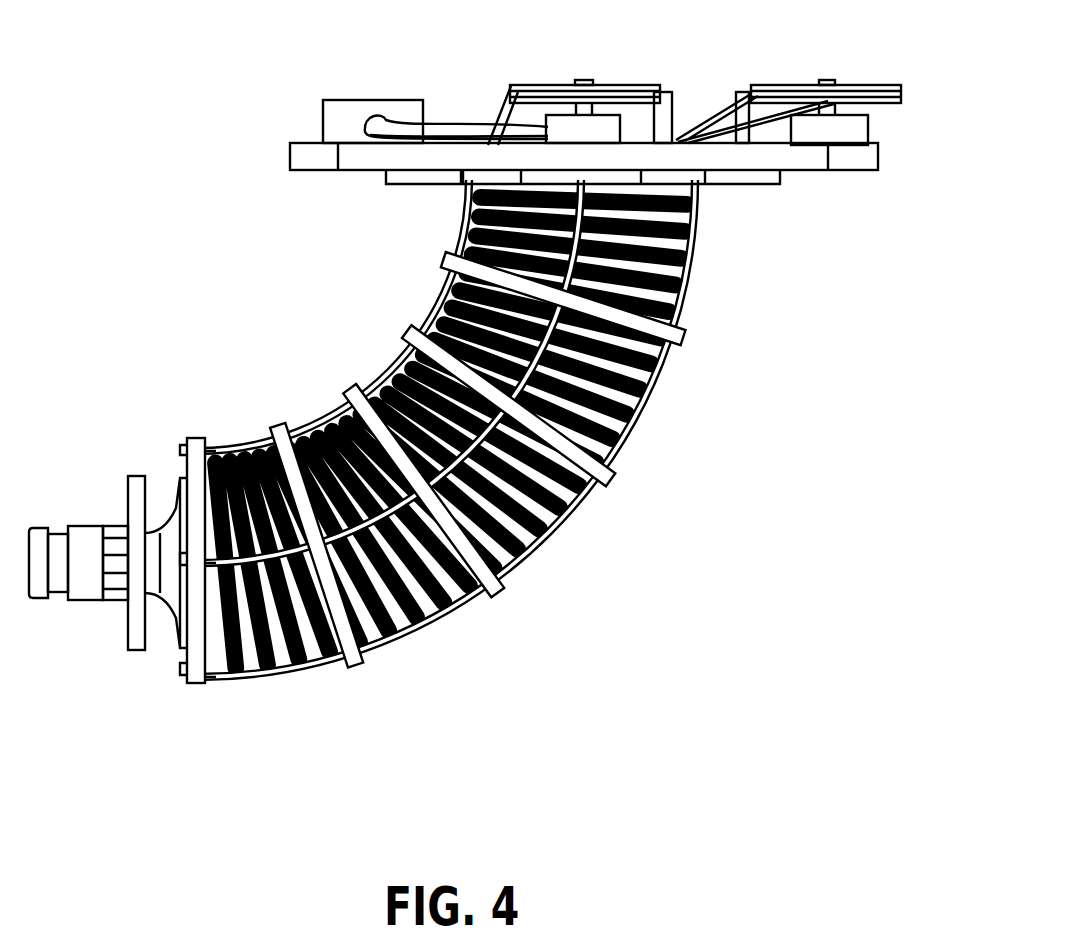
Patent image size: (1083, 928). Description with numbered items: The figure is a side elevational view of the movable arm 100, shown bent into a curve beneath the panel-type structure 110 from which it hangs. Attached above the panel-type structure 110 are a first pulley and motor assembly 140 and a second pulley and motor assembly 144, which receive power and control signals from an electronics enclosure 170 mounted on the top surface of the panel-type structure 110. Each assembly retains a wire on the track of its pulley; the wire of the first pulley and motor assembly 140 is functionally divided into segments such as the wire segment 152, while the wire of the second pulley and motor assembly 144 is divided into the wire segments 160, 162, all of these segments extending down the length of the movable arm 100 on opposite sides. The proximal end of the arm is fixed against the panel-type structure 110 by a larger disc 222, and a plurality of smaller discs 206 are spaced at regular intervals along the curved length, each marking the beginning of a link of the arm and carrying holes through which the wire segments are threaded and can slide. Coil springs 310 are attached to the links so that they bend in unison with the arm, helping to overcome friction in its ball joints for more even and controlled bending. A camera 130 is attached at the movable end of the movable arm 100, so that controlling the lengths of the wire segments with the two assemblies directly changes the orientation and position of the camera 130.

The movable arm 100 is at (571, 596).
The panel-type structure 110 is at (297, 135).
The camera 130 is at (75, 578).
The first pulley and motor assembly 140 is at (843, 122).
The second pulley and motor assembly 144 is at (598, 120).
The wire segment 152 is at (630, 225).
The wire segment 160 is at (678, 265).
The wire segment 162 is at (463, 225).
The electronics enclosure 170 is at (364, 92).
The discs 206 is at (268, 420).
The disc 222 is at (753, 178).
The coil springs 310 is at (663, 283).